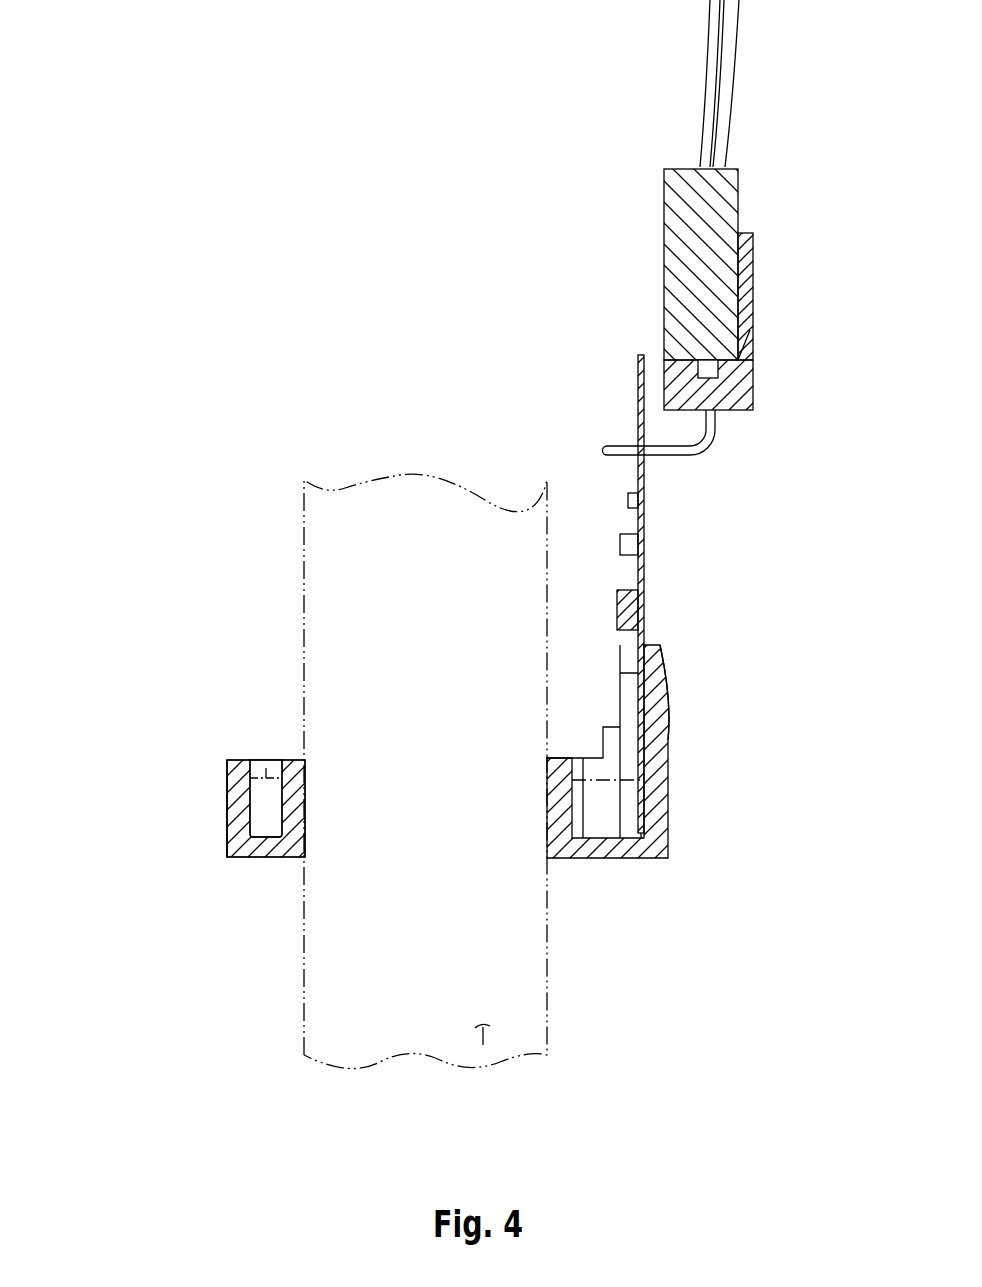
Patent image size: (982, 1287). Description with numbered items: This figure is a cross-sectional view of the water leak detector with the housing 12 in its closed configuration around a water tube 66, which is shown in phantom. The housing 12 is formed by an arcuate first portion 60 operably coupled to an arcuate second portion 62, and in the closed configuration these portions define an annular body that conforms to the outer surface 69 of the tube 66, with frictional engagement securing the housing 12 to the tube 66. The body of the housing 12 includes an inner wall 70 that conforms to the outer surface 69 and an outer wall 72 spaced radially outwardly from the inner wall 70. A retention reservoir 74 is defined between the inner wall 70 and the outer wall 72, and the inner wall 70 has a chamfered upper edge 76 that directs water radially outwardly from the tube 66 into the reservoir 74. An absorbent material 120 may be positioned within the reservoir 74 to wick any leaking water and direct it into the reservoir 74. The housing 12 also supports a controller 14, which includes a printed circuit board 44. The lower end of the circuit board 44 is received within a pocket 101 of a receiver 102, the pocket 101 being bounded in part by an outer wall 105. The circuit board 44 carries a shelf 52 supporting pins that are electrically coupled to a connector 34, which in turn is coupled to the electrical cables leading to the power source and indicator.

The housing 12 is at (160, 833).
The controller 14 is at (806, 238).
The connector 34 is at (663, 249).
The printed circuit board 44 is at (641, 575).
The shelf 52 is at (755, 383).
The arcuate first portion 60 is at (668, 780).
The arcuate second portion 62 is at (227, 842).
The water tube 66 is at (304, 983).
The outer surface 69 is at (483, 1045).
The inner wall 70 is at (305, 799).
The outer wall 72 is at (227, 805).
The retention reservoir 74 is at (276, 746).
The chamfered upper edge 76 is at (583, 758).
The pocket 101 is at (638, 848).
The receiver 102 is at (596, 617).
The outer wall of pocket 105 is at (665, 677).
The absorbent material 120 is at (265, 765).